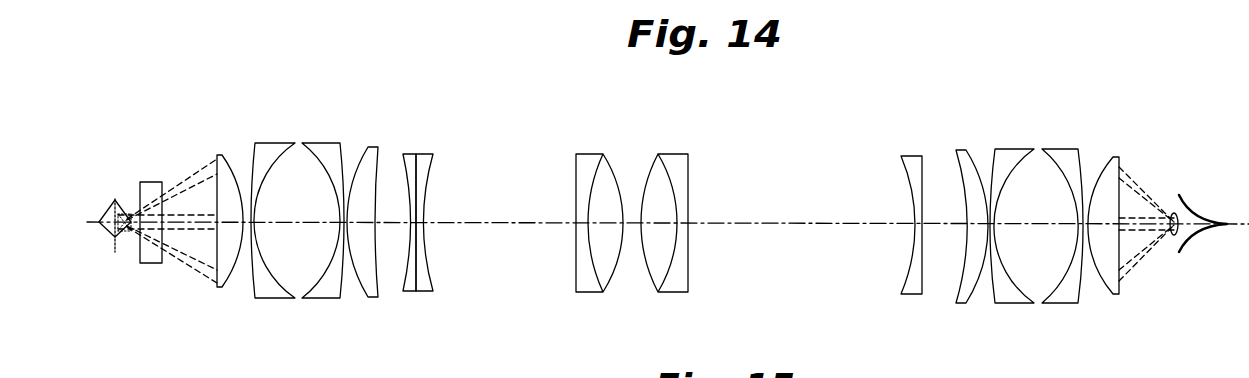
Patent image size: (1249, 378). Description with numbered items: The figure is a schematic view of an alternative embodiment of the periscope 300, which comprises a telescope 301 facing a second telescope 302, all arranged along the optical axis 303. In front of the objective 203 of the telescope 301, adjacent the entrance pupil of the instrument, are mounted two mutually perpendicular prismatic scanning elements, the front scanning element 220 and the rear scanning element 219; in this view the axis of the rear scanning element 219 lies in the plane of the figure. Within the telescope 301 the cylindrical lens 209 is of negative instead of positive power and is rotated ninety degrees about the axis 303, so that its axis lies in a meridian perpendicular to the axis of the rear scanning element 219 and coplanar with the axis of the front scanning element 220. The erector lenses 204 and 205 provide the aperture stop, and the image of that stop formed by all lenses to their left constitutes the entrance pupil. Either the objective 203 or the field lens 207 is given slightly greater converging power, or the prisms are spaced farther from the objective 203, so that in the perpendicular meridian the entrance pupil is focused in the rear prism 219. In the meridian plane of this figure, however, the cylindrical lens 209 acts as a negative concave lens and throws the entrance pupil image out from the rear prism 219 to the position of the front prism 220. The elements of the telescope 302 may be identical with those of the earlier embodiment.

The front scanning element 220 is at (110, 200).
The rear scanning element 219 is at (150, 182).
The objective 203 is at (384, 305).
The cylindrical lens 209 is at (410, 292).
The field lens 207 is at (433, 290).
The axis 303 is at (478, 222).
The periscope 300 is at (629, 219).
The erector lens 204 is at (590, 290).
The erector lens 205 is at (668, 241).
The telescope 301 is at (452, 243).
The telescope 302 is at (1135, 333).